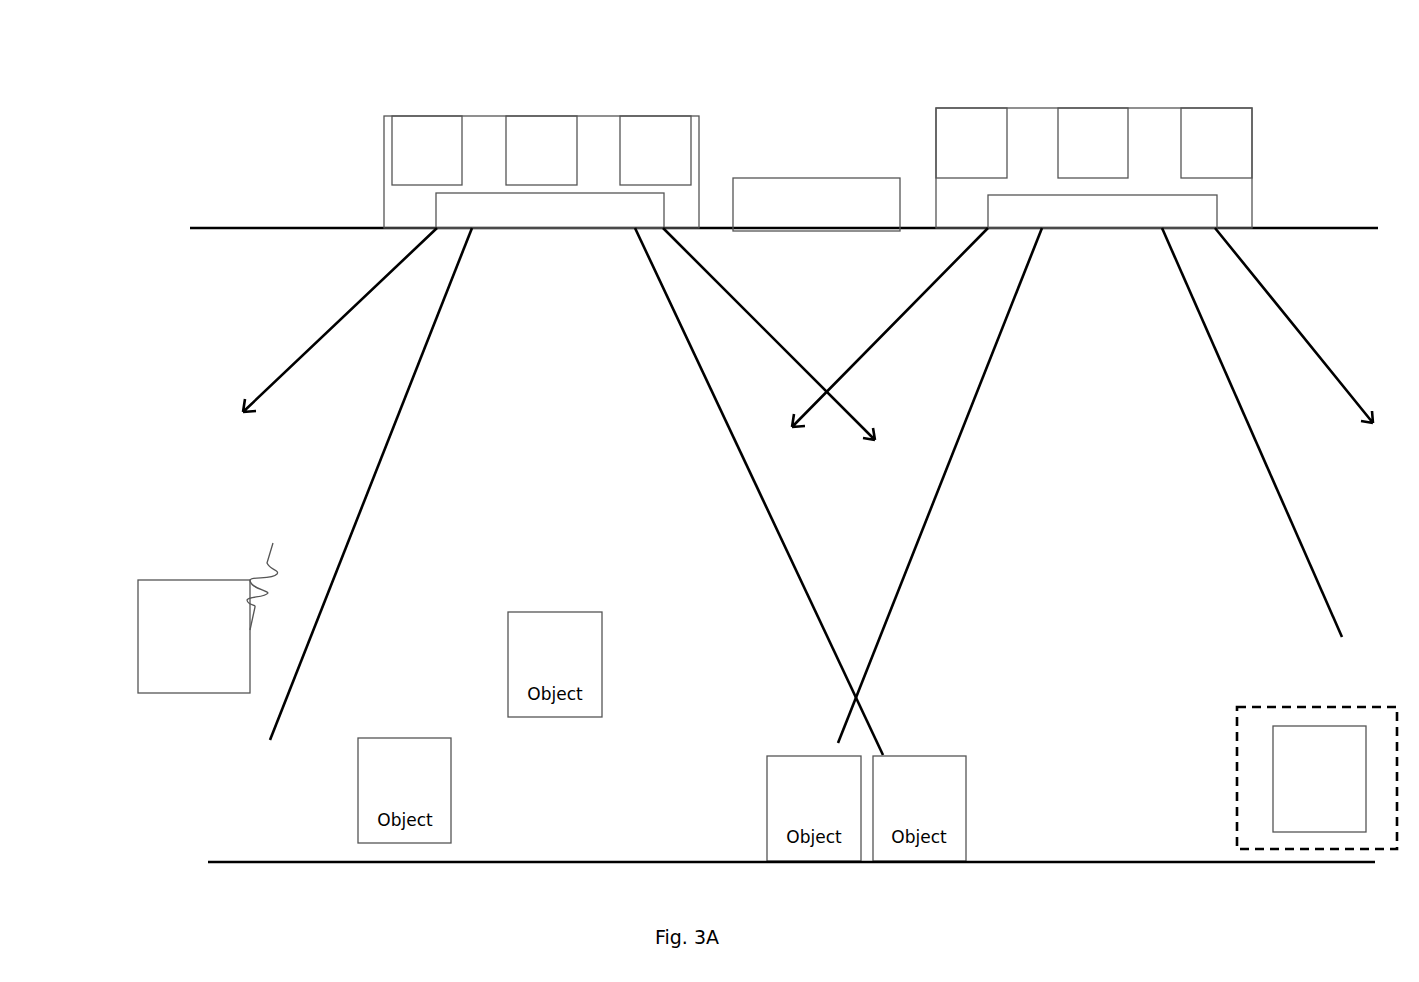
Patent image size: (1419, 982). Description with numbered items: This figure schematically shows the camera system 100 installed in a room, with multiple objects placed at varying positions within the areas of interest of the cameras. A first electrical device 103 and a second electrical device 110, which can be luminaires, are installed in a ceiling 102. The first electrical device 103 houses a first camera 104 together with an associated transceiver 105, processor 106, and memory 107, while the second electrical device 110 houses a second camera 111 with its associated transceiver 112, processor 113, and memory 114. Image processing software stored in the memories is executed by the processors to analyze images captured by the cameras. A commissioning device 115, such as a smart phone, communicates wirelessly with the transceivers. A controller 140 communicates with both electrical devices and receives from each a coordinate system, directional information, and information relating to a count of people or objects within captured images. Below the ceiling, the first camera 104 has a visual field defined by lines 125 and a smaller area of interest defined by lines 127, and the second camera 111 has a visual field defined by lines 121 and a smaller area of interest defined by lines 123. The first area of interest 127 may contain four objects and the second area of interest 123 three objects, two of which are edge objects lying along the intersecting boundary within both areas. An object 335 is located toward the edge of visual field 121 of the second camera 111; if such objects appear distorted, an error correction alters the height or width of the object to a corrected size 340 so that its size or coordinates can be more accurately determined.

The camera system 100 is at (309, 72).
The ceiling 102 is at (218, 228).
The first electrical device 103 is at (541, 159).
The first camera 104 is at (550, 210).
The first transceiver 105 is at (427, 150).
The processor 106 is at (541, 150).
The memory 107 is at (655, 150).
The second electrical device 110 is at (1094, 153).
The second camera 111 is at (1102, 211).
The second transceiver 112 is at (971, 143).
The processor 113 is at (1093, 143).
The memory 114 is at (1216, 143).
The commissioning device 115 is at (208, 618).
The visual field lines 121 is at (1082, 327).
The second area of interest lines 123 is at (1090, 485).
The visual field lines 125 is at (555, 334).
The first area of interest lines 127 is at (576, 491).
The controller 140 is at (816, 204).
The object 335 is at (1319, 779).
The corrected size 340 is at (1238, 733).